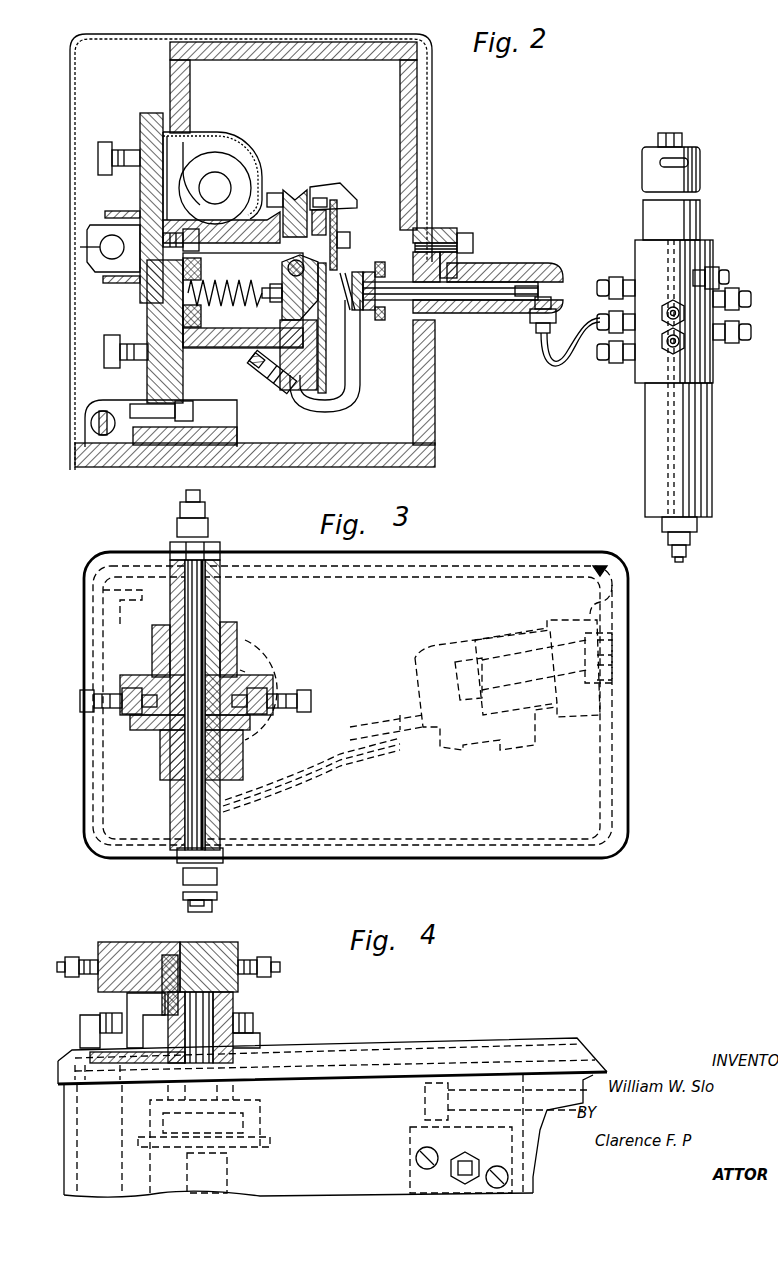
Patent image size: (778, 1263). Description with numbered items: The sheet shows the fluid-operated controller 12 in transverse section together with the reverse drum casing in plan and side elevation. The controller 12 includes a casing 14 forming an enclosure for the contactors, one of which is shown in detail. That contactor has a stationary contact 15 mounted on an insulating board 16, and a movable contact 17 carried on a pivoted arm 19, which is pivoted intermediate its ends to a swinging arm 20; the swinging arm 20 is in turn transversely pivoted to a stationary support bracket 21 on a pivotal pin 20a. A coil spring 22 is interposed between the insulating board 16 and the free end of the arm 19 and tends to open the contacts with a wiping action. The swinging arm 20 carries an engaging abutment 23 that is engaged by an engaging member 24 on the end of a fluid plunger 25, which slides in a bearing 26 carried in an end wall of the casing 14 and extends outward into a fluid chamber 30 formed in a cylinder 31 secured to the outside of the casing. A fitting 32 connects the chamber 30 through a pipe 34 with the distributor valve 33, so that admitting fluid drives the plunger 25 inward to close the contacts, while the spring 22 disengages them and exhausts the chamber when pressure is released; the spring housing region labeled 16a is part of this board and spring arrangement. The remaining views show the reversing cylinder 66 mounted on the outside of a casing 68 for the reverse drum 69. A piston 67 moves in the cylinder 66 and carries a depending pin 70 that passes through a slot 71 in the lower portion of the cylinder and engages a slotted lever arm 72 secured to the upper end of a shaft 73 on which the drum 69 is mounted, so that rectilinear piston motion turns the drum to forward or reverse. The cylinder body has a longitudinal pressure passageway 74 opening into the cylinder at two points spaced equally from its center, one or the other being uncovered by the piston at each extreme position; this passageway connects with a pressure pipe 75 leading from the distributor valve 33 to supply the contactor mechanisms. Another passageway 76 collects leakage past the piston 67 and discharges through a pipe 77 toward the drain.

In FIG. 2, the controller 12 is at (76, 46).
In FIG. 2, the casing 14 is at (437, 410).
In FIG. 2, the stationary contact 15 is at (290, 188).
In FIG. 2, the insulating board 16 is at (140, 192).
In FIG. 2, the spring housing 16a is at (256, 270).
In FIG. 2, the movable contact 17 is at (320, 190).
In FIG. 2, the pivoted arm 19 is at (316, 258).
In FIG. 2, the swinging arm 20 is at (325, 360).
In FIG. 2, the pivotal pin 20a is at (296, 392).
In FIG. 2, the stationary support bracket 21 is at (258, 362).
In FIG. 2, the coil spring 22 is at (262, 292).
In FIG. 2, the engaging abutment 23 is at (360, 272).
In FIG. 2, the engaging member 24 is at (362, 300).
In FIG. 2, the fluid plunger 25 is at (386, 282).
In FIG. 2, the bearing 26 is at (406, 314).
In FIG. 2, the fluid chamber 30 is at (526, 300).
In FIG. 2, the cylinder 31 is at (518, 263).
In FIG. 2, the fitting 32 is at (537, 335).
In FIG. 2, the distributor valve 33 is at (645, 445).
In FIG. 2, the pipe 34 is at (578, 354).
In FIG. 3, the reversing cylinder 66 is at (232, 625).
In FIG. 4, the reversing cylinder 66 is at (132, 924).
In FIG. 3, the piston 67 is at (187, 604).
In FIG. 4, the piston 67 is at (197, 942).
In FIG. 3, the casing 68 is at (538, 856).
In FIG. 4, the casing 68 is at (345, 1048).
In FIG. 3, the reverse drum 69 is at (273, 656).
In FIG. 4, the reverse drum 69 is at (262, 1148).
In FIG. 3, the depending pin 70 is at (160, 660).
In FIG. 4, the depending pin 70 is at (100, 1023).
In FIG. 3, the slot 71 is at (172, 785).
In FIG. 4, the slot 71 is at (142, 998).
In FIG. 3, the slotted lever arm 72 is at (160, 748).
In FIG. 4, the slotted lever arm 72 is at (238, 1000).
In FIG. 3, the shaft 73 is at (300, 712).
In FIG. 4, the shaft 73 is at (254, 1023).
In FIG. 3, the pressure passageway 74 is at (152, 665).
In FIG. 3, the pressure pipe 75 is at (90, 712).
In FIG. 3, the passageway 76 is at (242, 671).
In FIG. 3, the pipe 77 is at (300, 688).